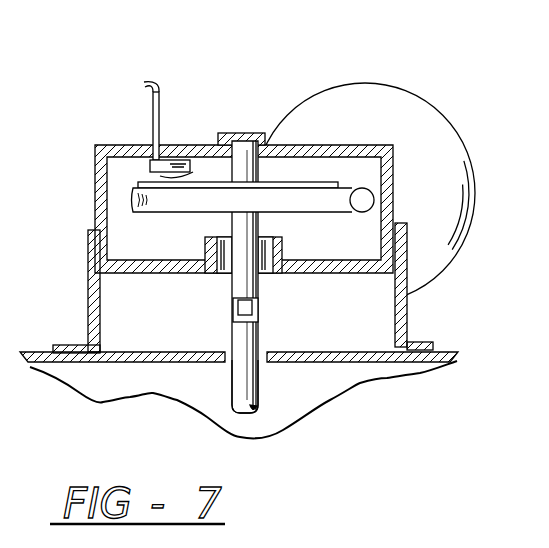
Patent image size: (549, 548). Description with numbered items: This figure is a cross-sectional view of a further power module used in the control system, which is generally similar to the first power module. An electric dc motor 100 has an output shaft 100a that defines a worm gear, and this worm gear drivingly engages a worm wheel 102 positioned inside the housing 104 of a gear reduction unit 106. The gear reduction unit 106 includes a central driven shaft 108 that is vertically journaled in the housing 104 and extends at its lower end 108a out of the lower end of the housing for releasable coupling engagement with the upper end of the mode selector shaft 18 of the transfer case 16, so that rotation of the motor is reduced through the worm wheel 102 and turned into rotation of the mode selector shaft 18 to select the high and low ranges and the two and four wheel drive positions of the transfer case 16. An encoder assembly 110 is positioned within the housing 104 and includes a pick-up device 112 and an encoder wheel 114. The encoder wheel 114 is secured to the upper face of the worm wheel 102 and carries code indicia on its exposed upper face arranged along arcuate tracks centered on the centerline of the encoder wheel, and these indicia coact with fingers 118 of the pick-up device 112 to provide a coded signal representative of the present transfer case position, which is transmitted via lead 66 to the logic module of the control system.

The electric dc motor 100 is at (430, 142).
The output shaft 100a is at (367, 195).
The worm wheel 102 is at (212, 202).
The housing 104 is at (130, 145).
The gear reduction unit 106 is at (248, 116).
The central driven shaft 108 is at (257, 218).
The lower end of central driven shaft 108a is at (262, 282).
The encoder assembly 110 is at (186, 128).
The pick-up device 112 is at (139, 161).
The encoder wheel 114 is at (205, 182).
The fingers 118 is at (190, 174).
The lead 66 is at (160, 100).
The transfer case 16 is at (300, 382).
The mode selector shaft 18 is at (233, 382).